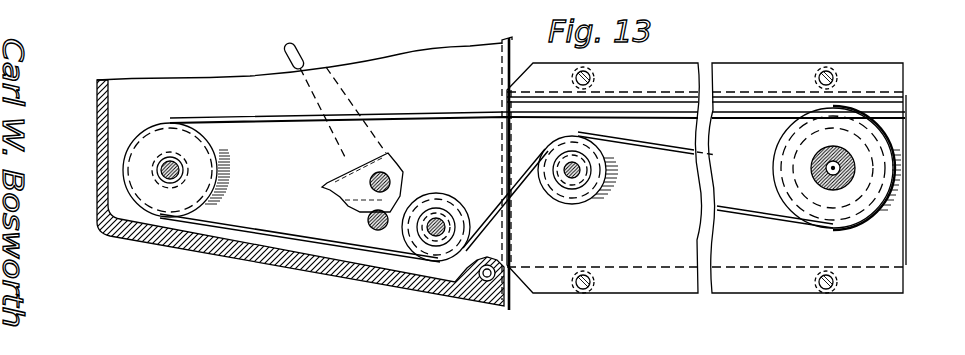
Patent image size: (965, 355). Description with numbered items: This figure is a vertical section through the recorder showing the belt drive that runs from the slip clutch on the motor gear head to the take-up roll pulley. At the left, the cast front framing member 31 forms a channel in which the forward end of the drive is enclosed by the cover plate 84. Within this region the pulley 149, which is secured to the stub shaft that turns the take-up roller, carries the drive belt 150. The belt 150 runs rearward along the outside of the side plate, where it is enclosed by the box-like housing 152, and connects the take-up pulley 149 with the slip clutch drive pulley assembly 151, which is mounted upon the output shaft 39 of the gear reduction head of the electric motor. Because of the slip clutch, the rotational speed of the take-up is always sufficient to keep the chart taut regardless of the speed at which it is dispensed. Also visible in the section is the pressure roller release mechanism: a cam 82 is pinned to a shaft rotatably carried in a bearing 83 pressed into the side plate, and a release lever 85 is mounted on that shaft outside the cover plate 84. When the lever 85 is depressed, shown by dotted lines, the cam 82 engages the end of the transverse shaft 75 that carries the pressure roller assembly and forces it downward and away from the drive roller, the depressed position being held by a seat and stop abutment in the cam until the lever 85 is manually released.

The front framing member 31 is at (97, 122).
The cover plate 84 is at (225, 90).
The release lever 85 is at (297, 67).
The drive belt 150 is at (357, 118).
The pulley 149 is at (200, 155).
The cam 82 is at (324, 184).
The bearing 83 is at (392, 170).
The transverse shaft 75 is at (367, 216).
The box-like housing 152 is at (732, 78).
The slip clutch drive pulley assembly 151 is at (872, 147).
The output shaft 39 is at (855, 173).